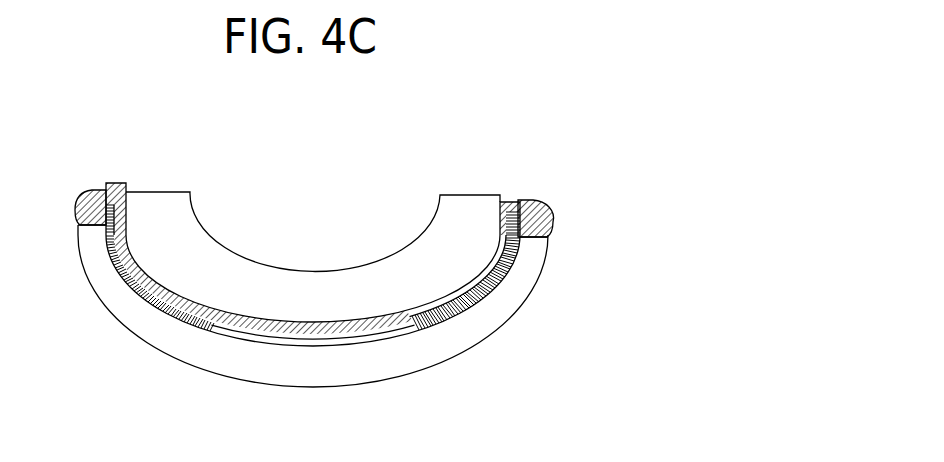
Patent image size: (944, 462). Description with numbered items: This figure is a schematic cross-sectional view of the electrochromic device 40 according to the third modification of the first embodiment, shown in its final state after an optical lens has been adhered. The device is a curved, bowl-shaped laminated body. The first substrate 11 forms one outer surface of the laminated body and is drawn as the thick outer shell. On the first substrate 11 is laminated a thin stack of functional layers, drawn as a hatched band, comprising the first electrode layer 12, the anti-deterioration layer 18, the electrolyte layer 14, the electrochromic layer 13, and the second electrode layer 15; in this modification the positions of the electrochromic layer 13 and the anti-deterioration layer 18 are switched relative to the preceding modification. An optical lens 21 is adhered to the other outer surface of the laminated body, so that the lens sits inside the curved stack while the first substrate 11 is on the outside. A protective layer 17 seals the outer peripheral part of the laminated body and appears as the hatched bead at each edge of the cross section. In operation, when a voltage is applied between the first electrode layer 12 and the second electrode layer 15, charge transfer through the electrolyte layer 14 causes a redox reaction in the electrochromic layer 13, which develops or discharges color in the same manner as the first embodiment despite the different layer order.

The electrochromic device 40 is at (393, 140).
The first substrate 11 is at (463, 338).
The protective layer 17 is at (95, 191).
The optical lens 21 is at (467, 208).
The first electrode layer 12 is at (467, 308).
The anti-deterioration layer 18 is at (300, 270).
The electrolyte layer 14 is at (313, 268).
The electrochromic layer 13 is at (313, 332).
The second electrode layer 15 is at (310, 261).